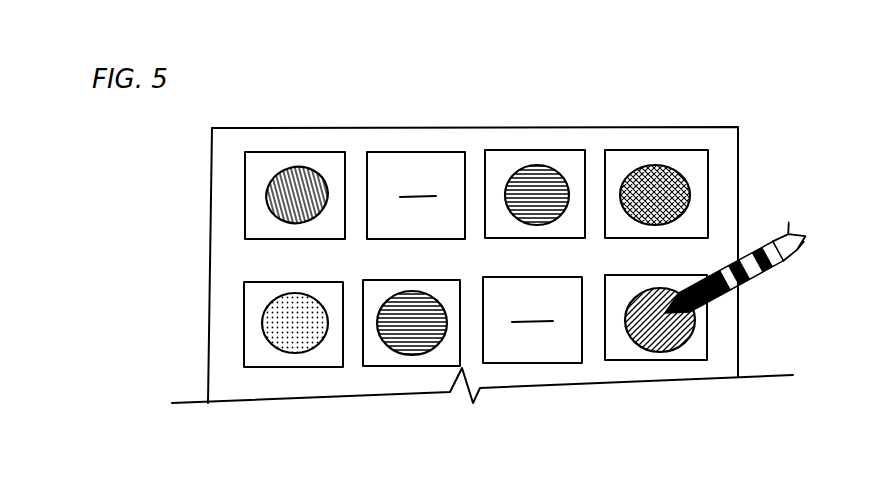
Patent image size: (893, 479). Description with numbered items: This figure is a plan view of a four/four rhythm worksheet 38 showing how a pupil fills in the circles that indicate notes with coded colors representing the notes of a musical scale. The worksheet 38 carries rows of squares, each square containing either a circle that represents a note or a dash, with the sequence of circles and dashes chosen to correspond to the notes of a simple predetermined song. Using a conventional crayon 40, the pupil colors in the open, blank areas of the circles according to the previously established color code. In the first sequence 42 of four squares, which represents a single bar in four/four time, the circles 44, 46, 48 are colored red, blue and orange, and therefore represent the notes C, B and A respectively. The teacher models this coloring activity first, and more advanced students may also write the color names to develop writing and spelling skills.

The worksheet 38 is at (210, 270).
The crayon 40 is at (767, 283).
The test array 42 is at (228, 205).
The circle 44 is at (305, 166).
The circle 46 is at (537, 166).
The circle 48 is at (655, 162).